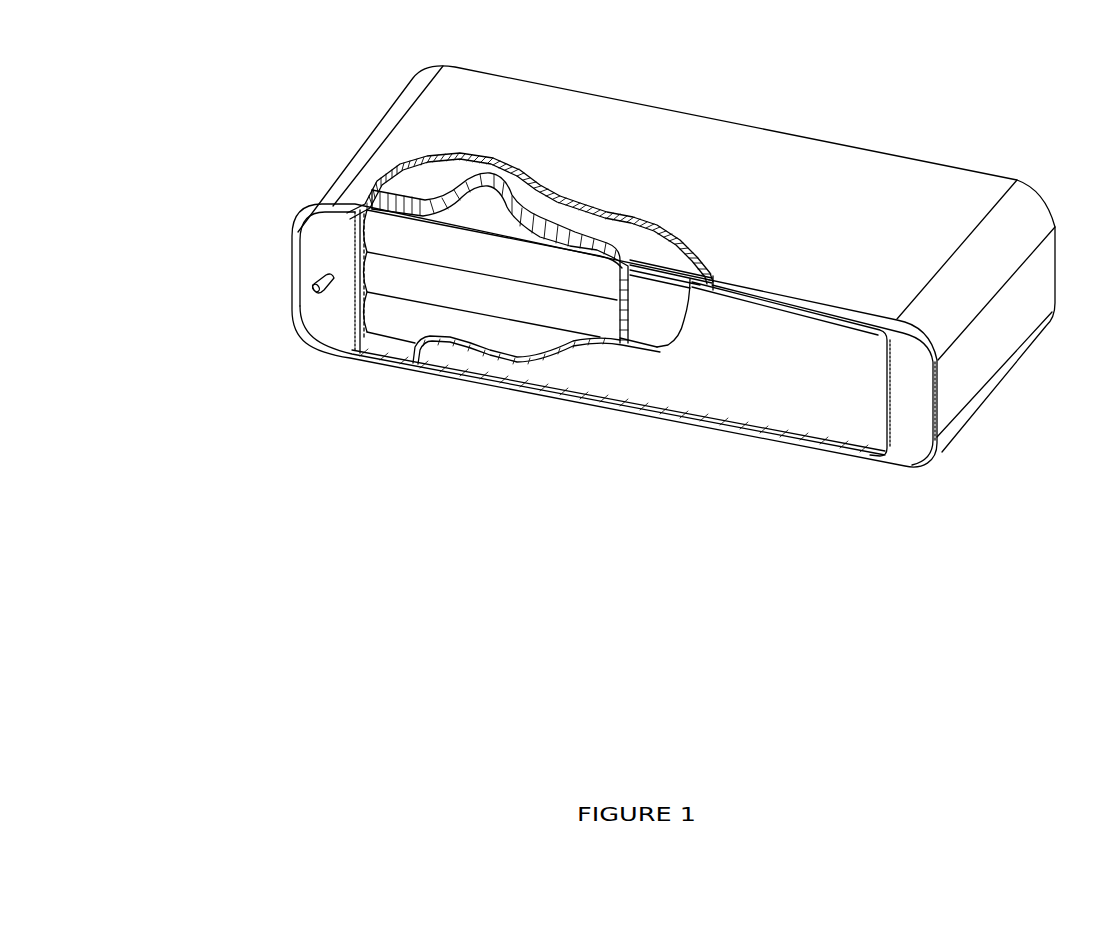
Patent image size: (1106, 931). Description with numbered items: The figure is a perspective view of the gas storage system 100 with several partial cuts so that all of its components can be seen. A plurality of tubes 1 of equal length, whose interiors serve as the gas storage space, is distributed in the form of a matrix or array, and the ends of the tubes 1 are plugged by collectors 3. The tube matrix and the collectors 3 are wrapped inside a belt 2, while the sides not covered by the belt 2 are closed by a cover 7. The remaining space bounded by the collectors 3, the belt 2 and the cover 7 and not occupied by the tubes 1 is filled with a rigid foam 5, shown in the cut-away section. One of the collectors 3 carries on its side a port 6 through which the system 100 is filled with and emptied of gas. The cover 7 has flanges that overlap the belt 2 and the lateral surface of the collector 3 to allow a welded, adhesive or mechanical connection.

The system 100 is at (268, 135).
The tubes 1 is at (507, 302).
The belt 2 is at (923, 193).
The collectors 3 is at (327, 238).
The rigid foam 5 is at (421, 182).
The port 6 is at (323, 290).
The cover 7 is at (697, 383).